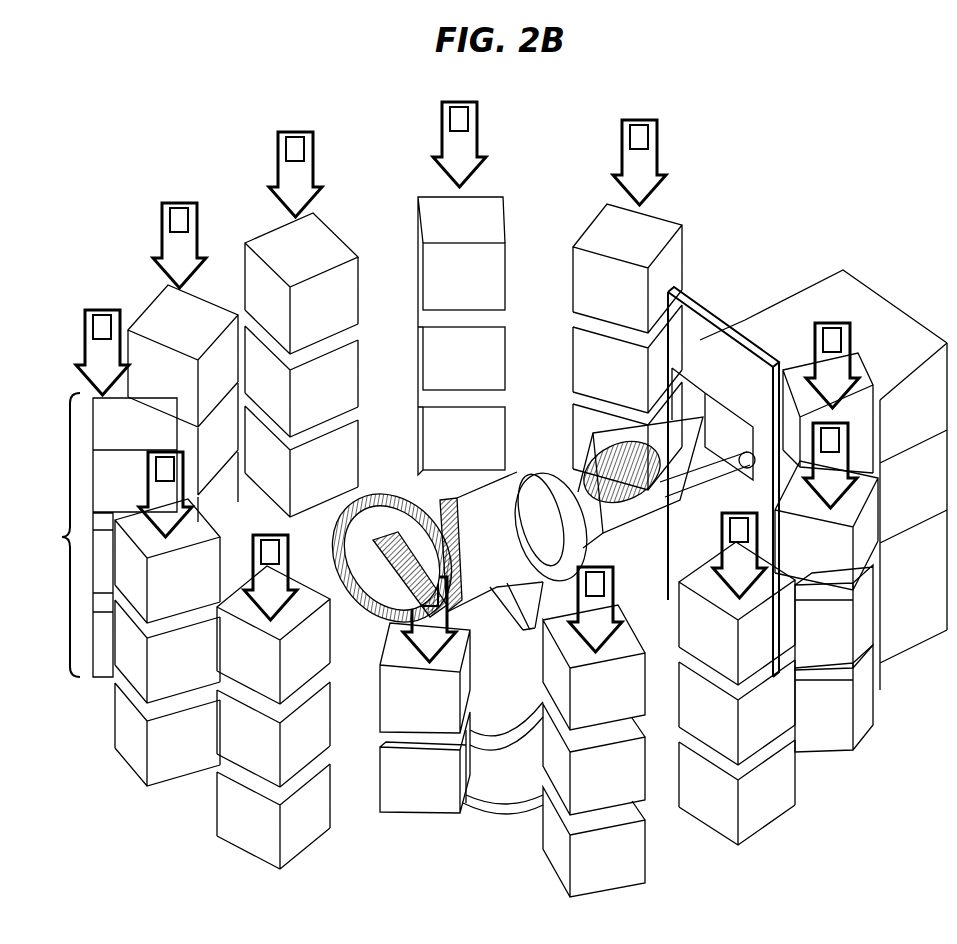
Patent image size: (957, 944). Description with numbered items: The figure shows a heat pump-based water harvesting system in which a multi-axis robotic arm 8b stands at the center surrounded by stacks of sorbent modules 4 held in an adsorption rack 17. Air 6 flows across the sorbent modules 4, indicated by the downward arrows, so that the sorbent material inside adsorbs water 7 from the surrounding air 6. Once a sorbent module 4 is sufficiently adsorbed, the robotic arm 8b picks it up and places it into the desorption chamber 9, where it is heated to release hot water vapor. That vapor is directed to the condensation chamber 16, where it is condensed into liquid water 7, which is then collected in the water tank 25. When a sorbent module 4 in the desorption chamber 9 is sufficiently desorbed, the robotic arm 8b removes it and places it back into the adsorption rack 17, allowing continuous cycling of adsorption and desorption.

The sorbent module 4 is at (485, 547).
The air 6 is at (467, 382).
The water 7 is at (467, 356).
The robotic arm 8b is at (531, 615).
The desorption chamber 9 is at (823, 335).
The condensation chamber 16 is at (913, 443).
The water tank 25 is at (913, 600).
The adsorption rack 17 is at (57, 535).